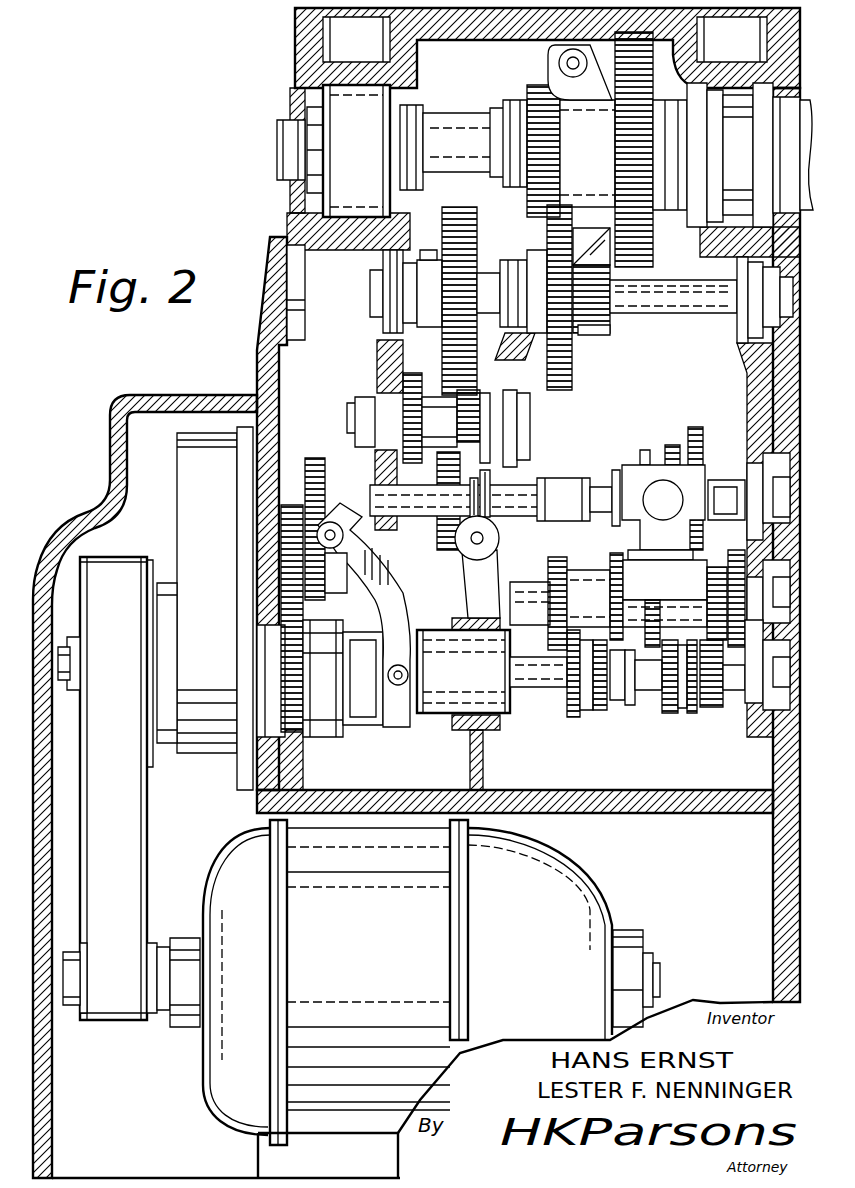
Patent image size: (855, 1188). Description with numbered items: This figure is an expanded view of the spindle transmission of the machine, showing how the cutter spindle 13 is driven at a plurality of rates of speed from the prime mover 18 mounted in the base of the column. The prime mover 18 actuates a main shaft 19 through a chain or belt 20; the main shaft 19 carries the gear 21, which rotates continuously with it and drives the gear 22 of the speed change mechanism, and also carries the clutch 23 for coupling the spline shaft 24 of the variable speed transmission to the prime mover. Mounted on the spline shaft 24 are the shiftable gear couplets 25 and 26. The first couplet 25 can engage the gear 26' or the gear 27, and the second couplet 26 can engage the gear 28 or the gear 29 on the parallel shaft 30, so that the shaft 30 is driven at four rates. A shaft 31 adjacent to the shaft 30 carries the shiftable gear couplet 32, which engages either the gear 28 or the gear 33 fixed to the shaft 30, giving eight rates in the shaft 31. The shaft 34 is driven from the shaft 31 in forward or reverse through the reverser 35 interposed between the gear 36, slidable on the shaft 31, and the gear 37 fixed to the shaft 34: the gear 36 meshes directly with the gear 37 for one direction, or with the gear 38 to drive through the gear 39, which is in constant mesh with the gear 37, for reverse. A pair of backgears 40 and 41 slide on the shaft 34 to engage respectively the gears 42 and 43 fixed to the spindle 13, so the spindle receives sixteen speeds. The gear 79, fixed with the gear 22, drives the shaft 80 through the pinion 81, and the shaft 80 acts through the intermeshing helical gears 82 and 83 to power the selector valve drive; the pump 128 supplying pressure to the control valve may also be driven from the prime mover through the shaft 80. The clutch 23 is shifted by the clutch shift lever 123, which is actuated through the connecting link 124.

The cutter spindle 13 is at (463, 127).
The gear 42 is at (537, 88).
The gear 43 is at (637, 72).
The gear 37 is at (477, 225).
The connecting link 124 is at (600, 248).
The reverser 35 is at (423, 395).
The gear 38 is at (405, 382).
The backgear 41 is at (600, 335).
The shaft 34 is at (667, 313).
The backgear 40 is at (573, 383).
The gear 39 is at (490, 403).
The gear 22 is at (287, 503).
The pinion 81 is at (338, 460).
The pump 128 is at (637, 483).
The shiftable gear couplet 32 is at (675, 443).
The shaft 31 is at (727, 487).
The shaft 80 is at (515, 493).
The clutch shift lever 123 is at (380, 550).
The gear 36 is at (445, 552).
The helical gear 82 is at (500, 515).
The shaft 30 is at (540, 582).
The gear 27 is at (617, 553).
The gear 26' is at (598, 590).
The gear 29 is at (728, 555).
The gear 28 is at (658, 602).
The gear 33 is at (707, 580).
The gear 79 is at (325, 582).
The helical gear 83 is at (470, 553).
The main shaft 19 is at (67, 640).
The gear 21 is at (295, 735).
The clutch 23 is at (335, 727).
The spline shaft 24 is at (520, 688).
The shiftable gear couplet 25 is at (585, 712).
The shiftable gear couplet 26 is at (692, 699).
The chain or belt 20 is at (133, 850).
The prime mover 18 is at (567, 882).